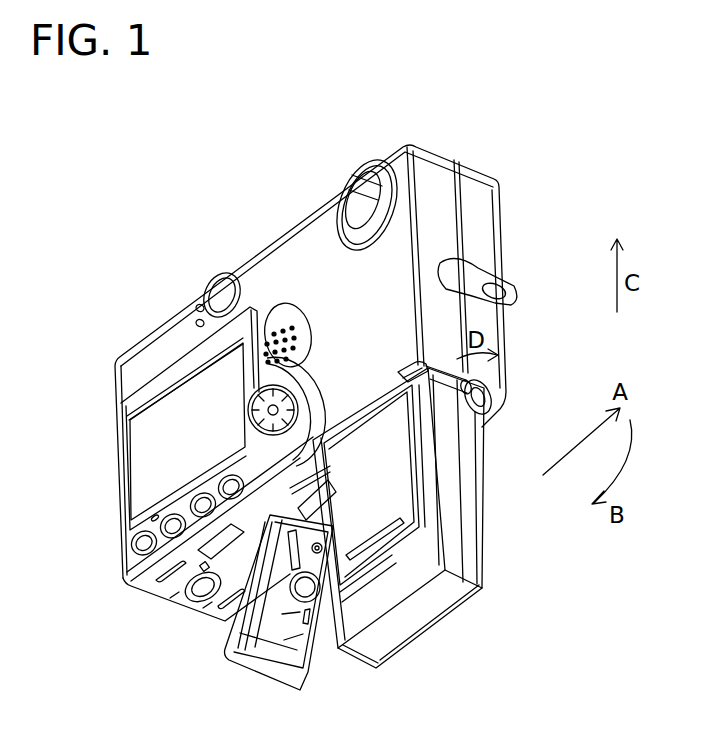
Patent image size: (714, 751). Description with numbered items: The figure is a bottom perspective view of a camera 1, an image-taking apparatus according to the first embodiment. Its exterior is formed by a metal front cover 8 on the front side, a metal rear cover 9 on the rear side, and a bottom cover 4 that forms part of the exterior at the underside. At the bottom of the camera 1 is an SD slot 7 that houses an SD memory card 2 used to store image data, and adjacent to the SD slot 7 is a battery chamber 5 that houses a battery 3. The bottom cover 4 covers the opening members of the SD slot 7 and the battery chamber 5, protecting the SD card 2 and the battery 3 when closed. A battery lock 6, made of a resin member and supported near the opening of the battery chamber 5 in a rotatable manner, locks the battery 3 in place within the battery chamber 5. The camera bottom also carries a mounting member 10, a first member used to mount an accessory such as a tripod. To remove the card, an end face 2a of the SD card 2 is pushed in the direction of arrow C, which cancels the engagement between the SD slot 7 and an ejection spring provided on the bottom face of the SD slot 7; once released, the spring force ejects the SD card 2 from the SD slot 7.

The camera 1 is at (456, 151).
The SD memory card 2 is at (400, 488).
The end face 2a is at (396, 536).
The battery 3 is at (454, 600).
The bottom cover 4 is at (275, 665).
The battery chamber 5 is at (492, 401).
The battery lock 6 is at (470, 386).
The SD slot 7 is at (390, 369).
The front cover 8 is at (481, 200).
The rear cover 9 is at (311, 222).
The mounting member 10 is at (202, 592).